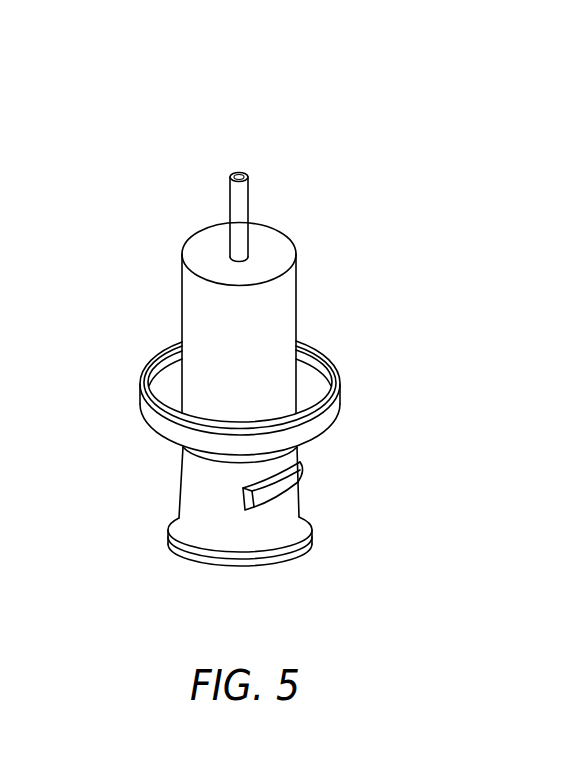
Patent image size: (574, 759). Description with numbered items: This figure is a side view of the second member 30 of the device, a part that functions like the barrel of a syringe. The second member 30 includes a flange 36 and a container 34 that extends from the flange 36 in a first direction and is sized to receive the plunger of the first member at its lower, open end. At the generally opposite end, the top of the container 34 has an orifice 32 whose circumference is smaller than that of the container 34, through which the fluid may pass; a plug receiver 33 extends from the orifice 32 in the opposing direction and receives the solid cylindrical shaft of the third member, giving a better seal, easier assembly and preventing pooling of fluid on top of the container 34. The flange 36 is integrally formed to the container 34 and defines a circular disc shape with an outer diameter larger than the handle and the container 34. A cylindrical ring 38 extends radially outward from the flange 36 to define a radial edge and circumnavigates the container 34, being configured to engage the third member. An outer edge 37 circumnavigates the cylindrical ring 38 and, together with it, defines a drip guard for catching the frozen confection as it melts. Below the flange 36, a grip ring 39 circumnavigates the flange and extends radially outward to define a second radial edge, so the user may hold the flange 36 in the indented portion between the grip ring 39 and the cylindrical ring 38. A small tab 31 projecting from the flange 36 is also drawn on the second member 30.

The second member 30 is at (155, 105).
The locking tab 31 is at (305, 478).
The orifice 32 is at (243, 172).
The plug receiver 33 is at (240, 206).
The container 34 is at (297, 308).
The flange 36 is at (195, 478).
The outer edge 37 is at (143, 400).
The cylindrical ring 38 is at (170, 386).
The grip ring 39 is at (300, 553).